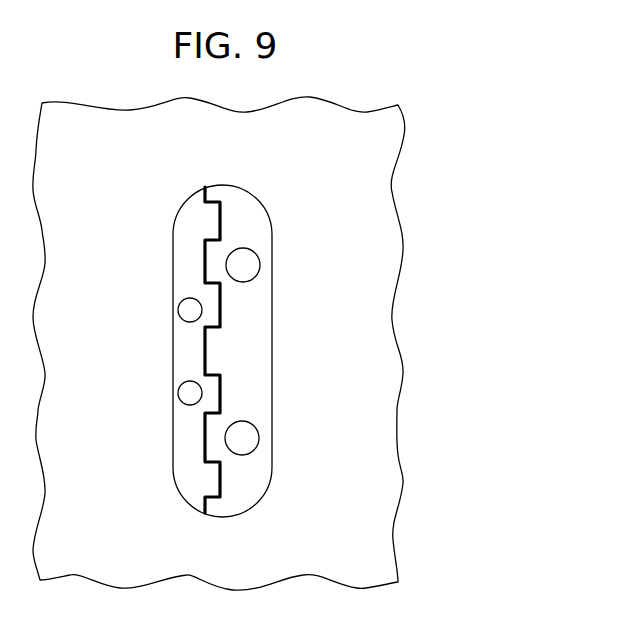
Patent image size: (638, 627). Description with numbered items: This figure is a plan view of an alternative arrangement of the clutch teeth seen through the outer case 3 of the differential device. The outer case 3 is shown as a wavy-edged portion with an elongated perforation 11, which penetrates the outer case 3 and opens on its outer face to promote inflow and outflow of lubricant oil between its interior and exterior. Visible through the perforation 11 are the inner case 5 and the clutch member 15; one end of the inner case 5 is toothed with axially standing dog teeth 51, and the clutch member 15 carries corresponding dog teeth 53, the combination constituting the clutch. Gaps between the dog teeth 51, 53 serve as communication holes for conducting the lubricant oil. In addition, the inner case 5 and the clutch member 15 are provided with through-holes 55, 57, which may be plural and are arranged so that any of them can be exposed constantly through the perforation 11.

The outer case 3 is at (357, 193).
The inner case 5 is at (192, 227).
The clutch member 15 is at (245, 217).
The dog teeth 51 is at (233, 300).
The dog teeth 53 is at (198, 247).
The through-hole 55 is at (188, 312).
The through-hole 57 is at (255, 444).
The perforation 11 is at (263, 497).